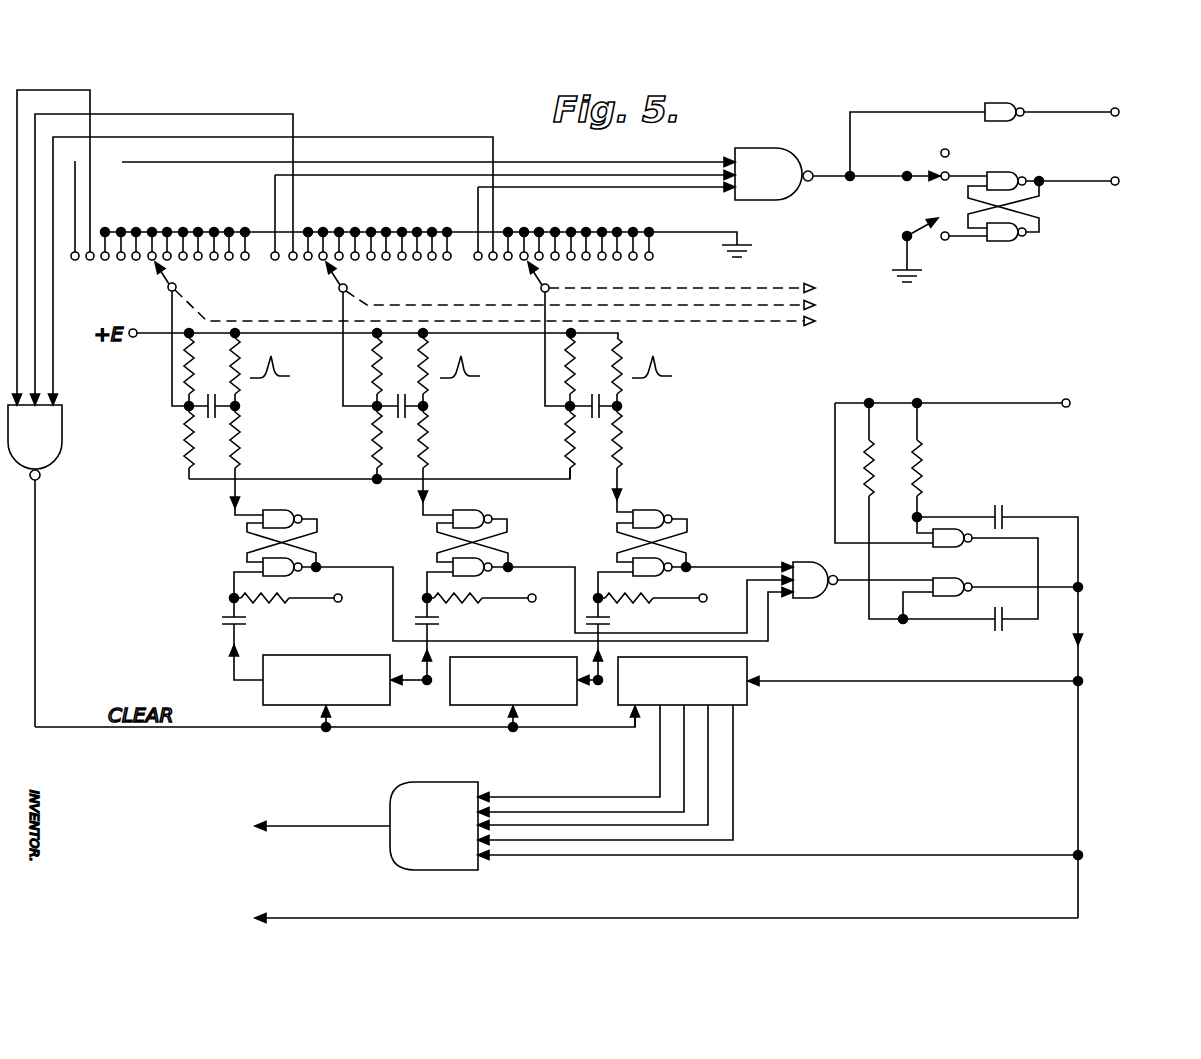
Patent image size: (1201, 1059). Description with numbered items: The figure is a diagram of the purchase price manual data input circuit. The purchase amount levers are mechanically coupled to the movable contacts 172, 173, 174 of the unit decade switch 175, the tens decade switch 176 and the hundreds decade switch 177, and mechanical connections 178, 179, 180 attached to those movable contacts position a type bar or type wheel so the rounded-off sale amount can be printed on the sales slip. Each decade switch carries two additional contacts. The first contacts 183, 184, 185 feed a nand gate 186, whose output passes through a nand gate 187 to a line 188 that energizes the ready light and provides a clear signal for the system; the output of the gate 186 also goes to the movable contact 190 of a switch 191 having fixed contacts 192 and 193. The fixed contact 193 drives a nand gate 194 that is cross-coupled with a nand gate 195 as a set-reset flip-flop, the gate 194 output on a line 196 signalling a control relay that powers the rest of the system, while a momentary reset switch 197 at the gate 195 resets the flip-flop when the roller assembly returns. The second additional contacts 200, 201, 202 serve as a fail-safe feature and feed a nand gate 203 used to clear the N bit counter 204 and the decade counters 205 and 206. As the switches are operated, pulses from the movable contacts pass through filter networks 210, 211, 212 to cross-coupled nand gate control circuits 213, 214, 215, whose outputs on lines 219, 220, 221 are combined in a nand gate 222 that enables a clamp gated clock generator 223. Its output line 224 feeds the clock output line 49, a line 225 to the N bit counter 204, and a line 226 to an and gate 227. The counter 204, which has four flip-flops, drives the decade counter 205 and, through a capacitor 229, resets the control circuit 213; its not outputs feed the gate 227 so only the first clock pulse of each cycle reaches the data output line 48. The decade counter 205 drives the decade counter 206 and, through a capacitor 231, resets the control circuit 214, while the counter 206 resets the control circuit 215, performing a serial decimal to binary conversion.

The output line 48 is at (318, 826).
The clock output line 49 is at (313, 915).
The movable contact 172 is at (550, 282).
The movable contact 173 is at (338, 270).
The movable contact 174 is at (165, 272).
The unit decade switch 175 is at (702, 221).
The 10's decade switch 176 is at (462, 211).
The 100's decade switch 177 is at (262, 211).
The mechanical connection 178 is at (688, 276).
The mechanical connection 179 is at (754, 305).
The mechanical connection 180 is at (740, 324).
The first contact 183 is at (477, 261).
The first contact 184 is at (274, 261).
The first contact 185 is at (75, 228).
The nand gate 186 is at (772, 148).
The nand gate 187 is at (985, 104).
The line 188 is at (1079, 118).
The movable contact 190 is at (922, 180).
The switch 191 is at (922, 157).
The fixed contact 192 is at (949, 150).
The fixed contact 193 is at (950, 192).
The nand gate 194 is at (1010, 173).
The nand gate 195 is at (1005, 246).
The line 196 is at (1083, 181).
The reset switch 197 is at (904, 226).
The second additional contact 200 is at (493, 261).
The second additional contact 201 is at (294, 261).
The second additional contact 202 is at (93, 260).
The nand gate 203 is at (57, 429).
The N bit counter 204 is at (749, 701).
The decade counter 205 is at (452, 704).
The decade counter 206 is at (263, 692).
The filter network 210 is at (645, 421).
The filter network 211 is at (448, 434).
The filter network 212 is at (268, 441).
The cross-coupled nand gate control circuit 213 is at (705, 538).
The cross-coupled nand gate control circuit 214 is at (513, 540).
The cross-coupled nand gate control circuit 215 is at (325, 541).
The line 219 is at (760, 552).
The line 220 is at (553, 558).
The line 221 is at (346, 567).
The nand gate 222 is at (800, 556).
The clamp gated clock generator 223 is at (1003, 578).
The output line 224 is at (1082, 625).
The line 225 is at (927, 681).
The line 226 is at (1080, 774).
The and gate 227 is at (446, 781).
The capacitor 229 is at (610, 624).
The capacitor 231 is at (492, 626).